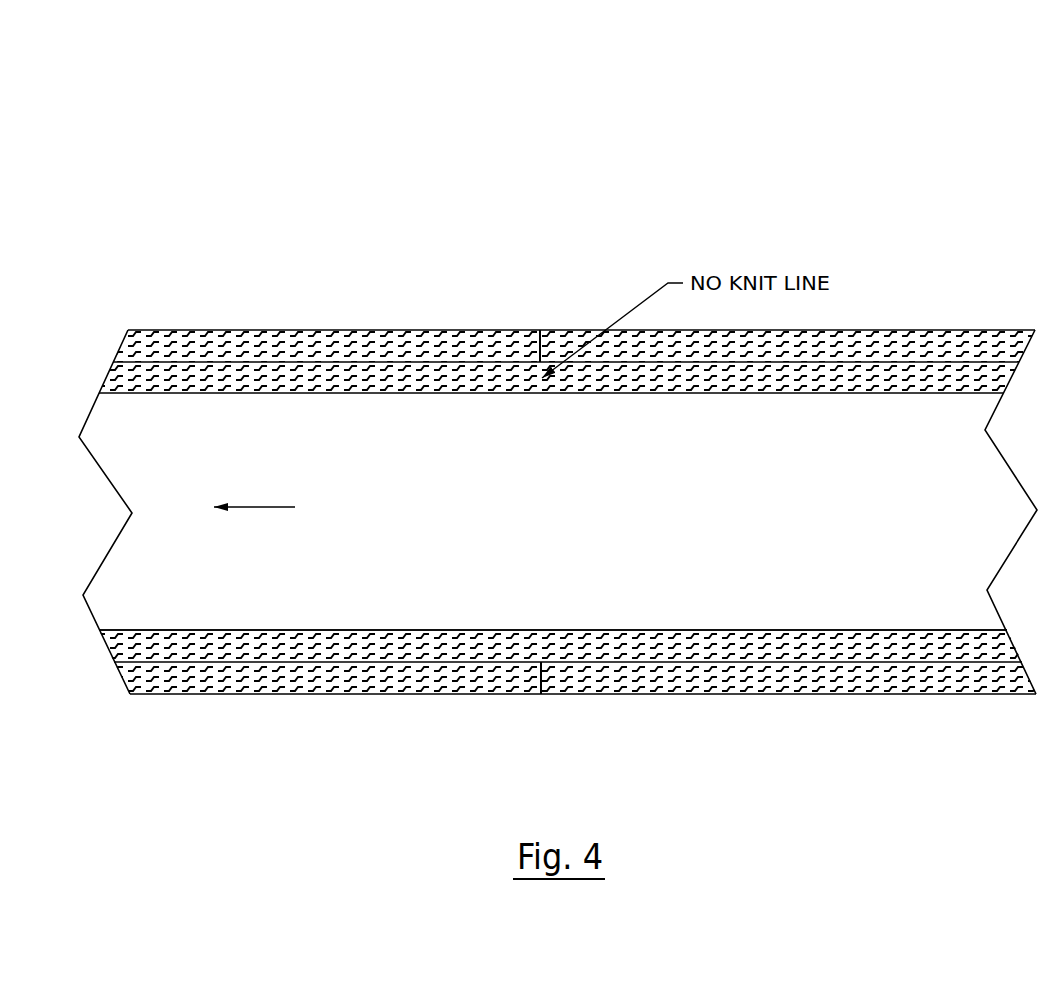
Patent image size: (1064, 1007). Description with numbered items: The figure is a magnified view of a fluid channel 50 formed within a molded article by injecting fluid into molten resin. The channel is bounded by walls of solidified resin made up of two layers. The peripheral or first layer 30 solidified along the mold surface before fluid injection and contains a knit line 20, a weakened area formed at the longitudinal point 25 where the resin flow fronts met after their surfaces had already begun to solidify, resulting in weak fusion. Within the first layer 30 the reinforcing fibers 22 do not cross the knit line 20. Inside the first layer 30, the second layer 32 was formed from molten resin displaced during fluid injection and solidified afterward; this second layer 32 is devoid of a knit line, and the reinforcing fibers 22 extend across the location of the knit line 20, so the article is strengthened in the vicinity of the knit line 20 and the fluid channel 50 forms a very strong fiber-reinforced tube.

The knit line 20 is at (550, 330).
The reinforcing fibers 22 is at (538, 393).
The longitudinal point 25 is at (538, 329).
The first layer 30 is at (322, 345).
The second layer 32 is at (238, 378).
The fluid channel 50 is at (314, 522).